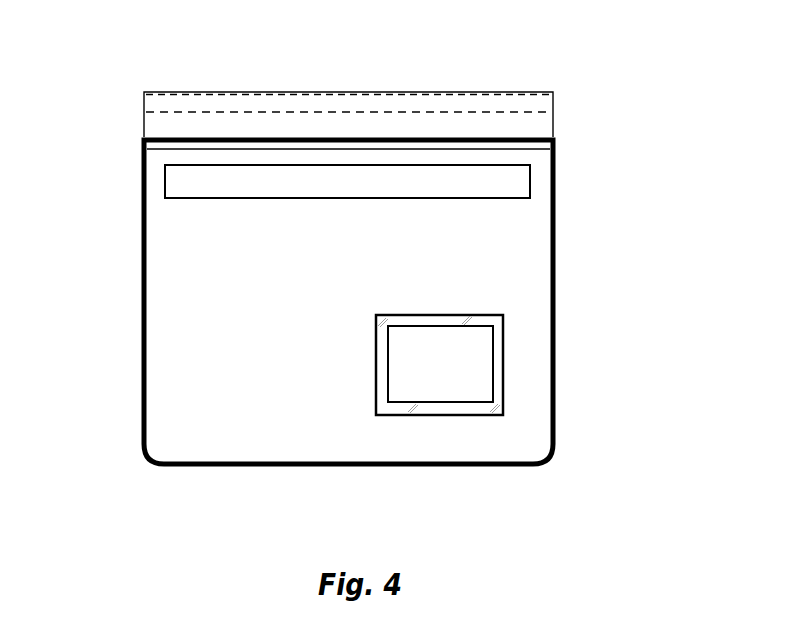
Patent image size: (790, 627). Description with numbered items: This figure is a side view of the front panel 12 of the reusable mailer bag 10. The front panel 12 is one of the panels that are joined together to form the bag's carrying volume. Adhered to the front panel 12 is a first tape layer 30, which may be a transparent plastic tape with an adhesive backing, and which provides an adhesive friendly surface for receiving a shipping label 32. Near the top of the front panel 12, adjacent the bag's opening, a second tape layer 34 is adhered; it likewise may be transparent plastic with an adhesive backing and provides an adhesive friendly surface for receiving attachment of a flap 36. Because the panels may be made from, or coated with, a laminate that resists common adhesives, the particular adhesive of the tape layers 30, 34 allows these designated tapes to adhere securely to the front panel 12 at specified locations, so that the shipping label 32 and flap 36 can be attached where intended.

The mailer bag 10 is at (76, 25).
The front panel 12 is at (160, 307).
The first tape layer 30 is at (497, 393).
The shipping label 32 is at (485, 345).
The second tape layer 34 is at (520, 181).
The flap 36 is at (545, 103).